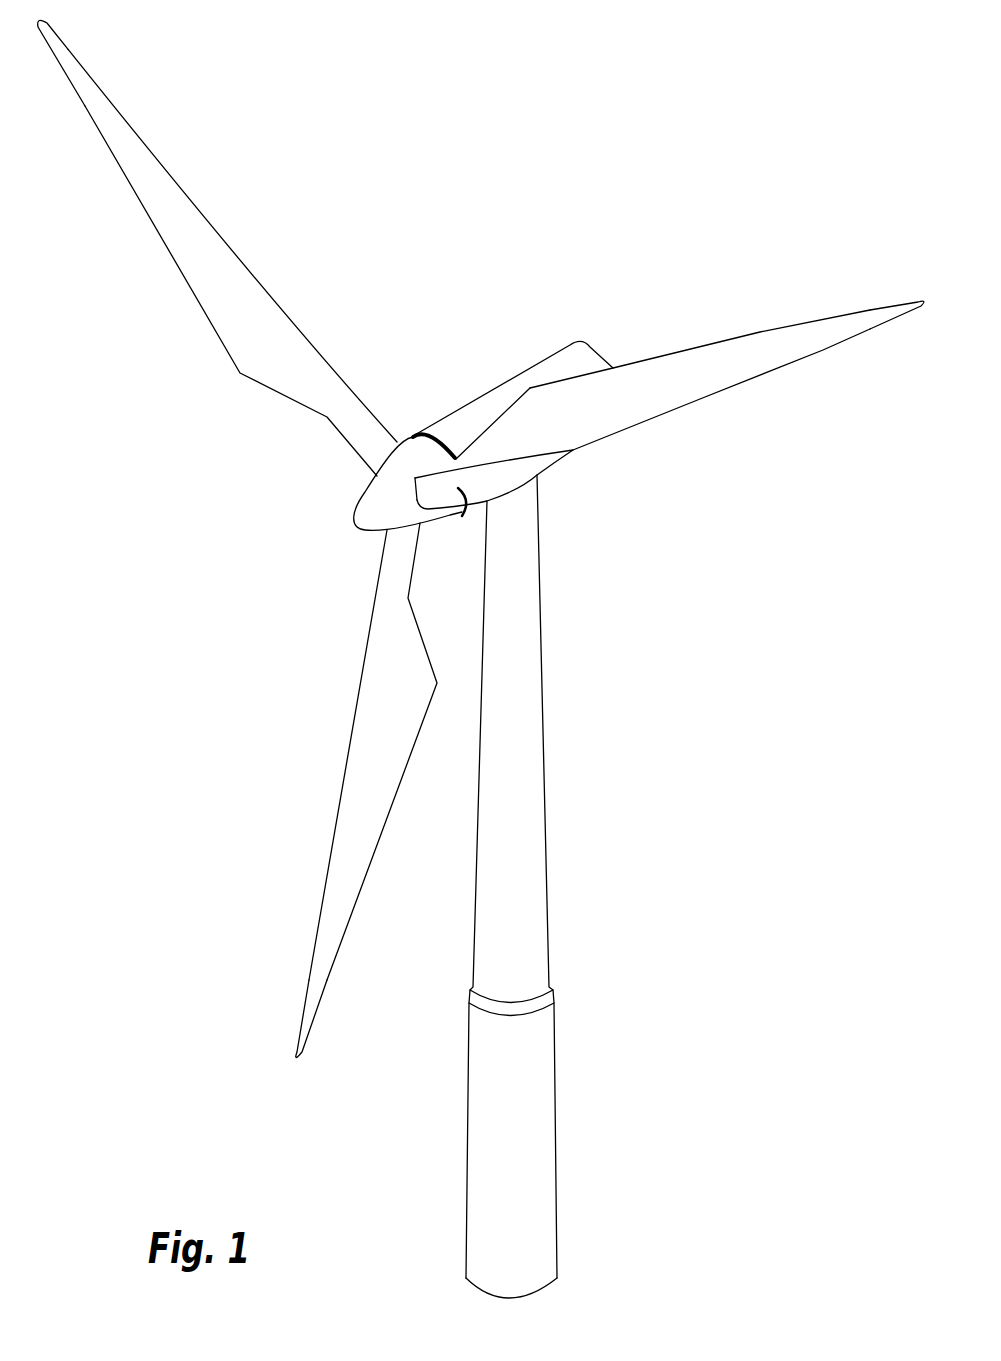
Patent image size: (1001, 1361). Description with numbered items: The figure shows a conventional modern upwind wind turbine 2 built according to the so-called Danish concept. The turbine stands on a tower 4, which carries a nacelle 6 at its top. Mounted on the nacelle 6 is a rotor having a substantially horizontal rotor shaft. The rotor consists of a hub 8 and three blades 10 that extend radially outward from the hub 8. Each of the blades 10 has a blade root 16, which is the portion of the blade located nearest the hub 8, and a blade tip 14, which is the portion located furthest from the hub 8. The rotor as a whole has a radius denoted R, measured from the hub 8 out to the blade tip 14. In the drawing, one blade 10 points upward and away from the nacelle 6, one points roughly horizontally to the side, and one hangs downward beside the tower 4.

The wind turbine 2 is at (647, 817).
The tower 4 is at (530, 733).
The nacelle 6 is at (477, 413).
The hub 8 is at (373, 503).
The blade 10 is at (255, 342).
The blade tip 14 is at (96, 79).
The blade root 16 is at (383, 455).